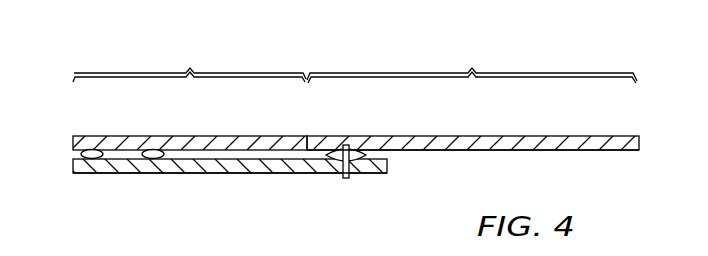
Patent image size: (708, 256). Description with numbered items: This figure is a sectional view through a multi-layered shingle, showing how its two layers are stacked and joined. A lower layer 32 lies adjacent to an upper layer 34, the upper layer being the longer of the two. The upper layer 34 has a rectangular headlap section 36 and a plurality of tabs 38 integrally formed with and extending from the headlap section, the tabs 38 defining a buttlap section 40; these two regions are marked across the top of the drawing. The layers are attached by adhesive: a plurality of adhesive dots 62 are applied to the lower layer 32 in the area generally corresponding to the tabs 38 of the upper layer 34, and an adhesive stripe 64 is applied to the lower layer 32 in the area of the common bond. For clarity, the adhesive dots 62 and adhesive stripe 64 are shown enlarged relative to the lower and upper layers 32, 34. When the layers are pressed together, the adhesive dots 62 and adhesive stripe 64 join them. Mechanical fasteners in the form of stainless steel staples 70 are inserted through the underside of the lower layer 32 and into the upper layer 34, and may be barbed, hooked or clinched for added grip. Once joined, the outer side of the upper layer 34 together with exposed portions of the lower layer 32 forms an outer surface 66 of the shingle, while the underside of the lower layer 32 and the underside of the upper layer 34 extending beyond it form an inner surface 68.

The lower layer 32 is at (179, 177).
The upper layer 34 is at (482, 148).
The headlap section 36 is at (472, 64).
The tabs 38 is at (72, 140).
The buttlap section 40 is at (189, 64).
The adhesive dots 62 is at (93, 152).
The adhesive stripe 64 is at (356, 152).
The outer surface 66 is at (525, 136).
The inner surface 68 is at (269, 175).
The staples 70 is at (348, 179).